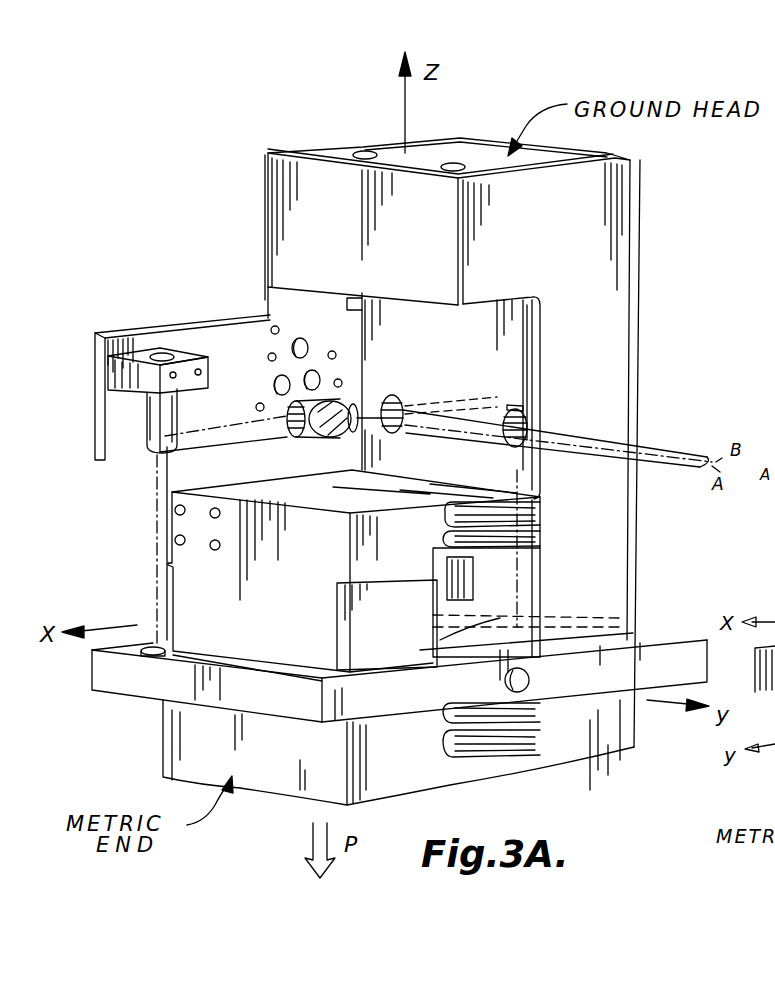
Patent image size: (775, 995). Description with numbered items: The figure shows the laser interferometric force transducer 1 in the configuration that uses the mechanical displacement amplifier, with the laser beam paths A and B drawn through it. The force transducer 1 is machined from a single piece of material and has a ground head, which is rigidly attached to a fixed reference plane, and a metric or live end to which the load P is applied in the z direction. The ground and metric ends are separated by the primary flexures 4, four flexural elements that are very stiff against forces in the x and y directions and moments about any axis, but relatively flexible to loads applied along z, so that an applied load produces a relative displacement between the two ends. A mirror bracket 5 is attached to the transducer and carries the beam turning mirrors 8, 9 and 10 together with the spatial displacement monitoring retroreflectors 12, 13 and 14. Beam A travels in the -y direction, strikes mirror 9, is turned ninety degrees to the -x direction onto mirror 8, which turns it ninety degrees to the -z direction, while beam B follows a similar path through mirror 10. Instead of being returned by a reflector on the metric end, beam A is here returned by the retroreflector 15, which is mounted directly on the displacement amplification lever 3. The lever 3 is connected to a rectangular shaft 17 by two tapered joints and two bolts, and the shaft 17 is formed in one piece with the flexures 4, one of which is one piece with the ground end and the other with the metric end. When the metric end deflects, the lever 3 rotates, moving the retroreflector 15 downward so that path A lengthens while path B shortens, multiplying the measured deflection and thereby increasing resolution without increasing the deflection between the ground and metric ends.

The force transducer 1 is at (594, 213).
The displacement amplification lever 3 is at (165, 671).
The primary flexures 4 is at (537, 543).
The mirror bracket 5 is at (200, 346).
The beam turning mirror 8 is at (150, 412).
The beam turning mirror 9 is at (310, 436).
The beam turning mirror 10 is at (343, 403).
The spatial displacement monitoring retroreflector 12 is at (293, 338).
The spatial displacement monitoring retroreflector 13 is at (304, 372).
The spatial displacement monitoring retroreflector 14 is at (274, 377).
The retroreflector 15 is at (150, 652).
The rectangular shaft 17 is at (490, 650).